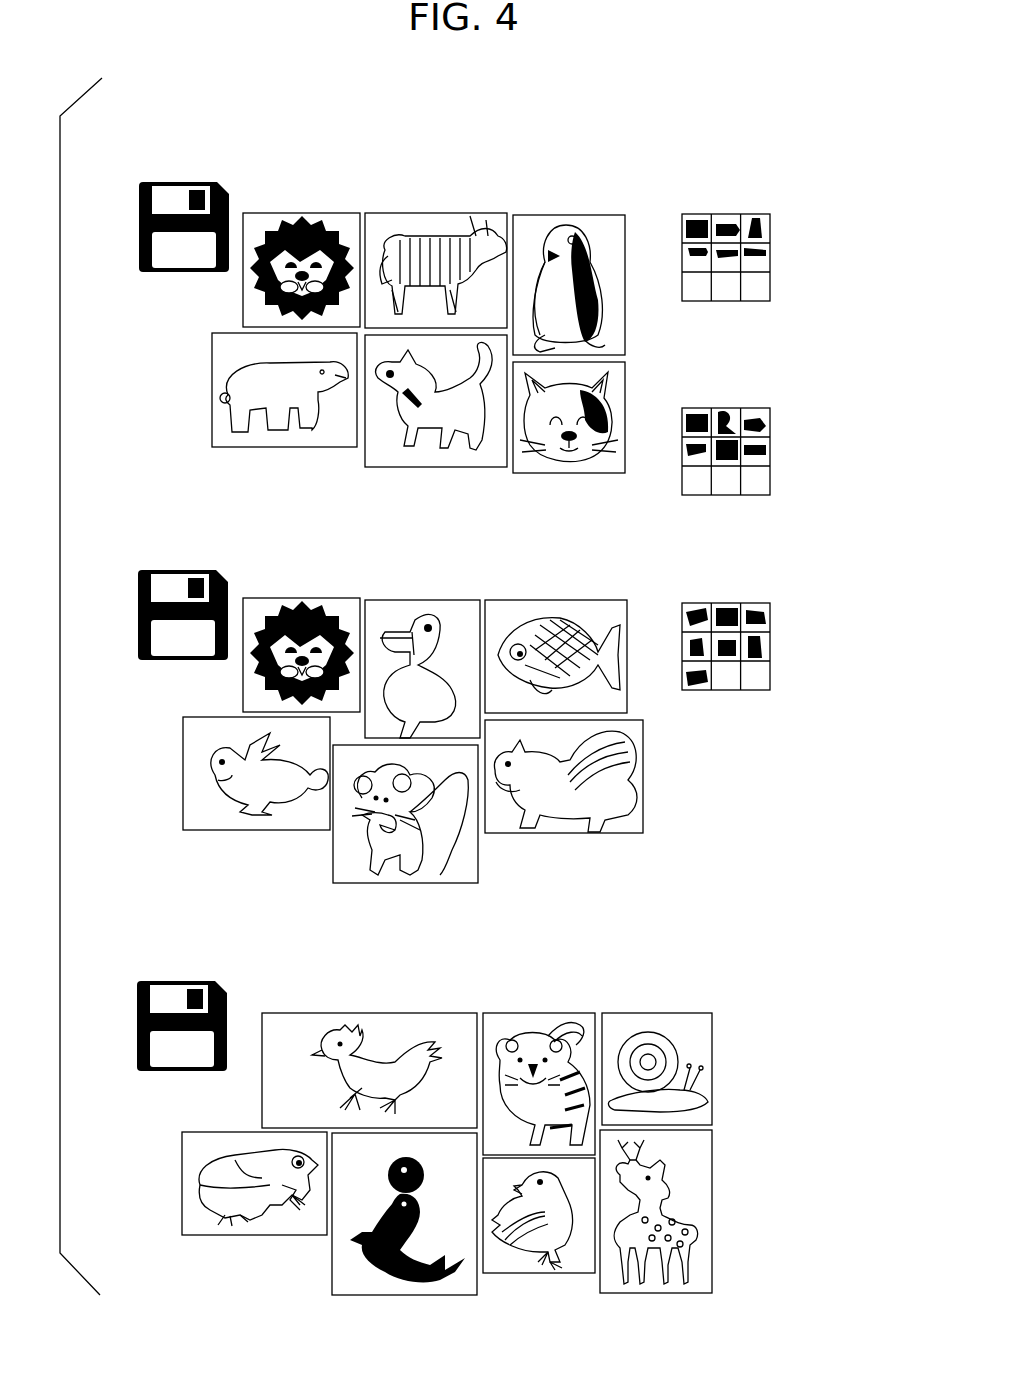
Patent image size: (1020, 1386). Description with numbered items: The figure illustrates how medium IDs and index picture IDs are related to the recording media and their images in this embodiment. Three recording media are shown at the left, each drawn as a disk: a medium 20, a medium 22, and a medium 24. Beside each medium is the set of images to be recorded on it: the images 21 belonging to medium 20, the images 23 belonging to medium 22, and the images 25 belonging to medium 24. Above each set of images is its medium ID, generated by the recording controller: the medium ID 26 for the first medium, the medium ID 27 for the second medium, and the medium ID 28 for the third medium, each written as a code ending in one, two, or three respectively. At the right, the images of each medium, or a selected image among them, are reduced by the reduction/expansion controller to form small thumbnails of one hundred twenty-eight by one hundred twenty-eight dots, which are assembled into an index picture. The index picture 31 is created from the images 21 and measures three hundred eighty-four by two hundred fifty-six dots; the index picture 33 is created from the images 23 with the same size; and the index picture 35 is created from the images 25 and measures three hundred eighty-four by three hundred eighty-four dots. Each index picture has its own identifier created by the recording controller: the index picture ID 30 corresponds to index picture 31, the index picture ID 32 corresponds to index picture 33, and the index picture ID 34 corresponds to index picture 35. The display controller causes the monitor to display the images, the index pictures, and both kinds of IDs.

The medium 20 is at (185, 182).
The images 21 is at (250, 317).
The medium 22 is at (185, 570).
The images 23 is at (250, 704).
The medium 24 is at (184, 981).
The images 25 is at (487, 1084).
The medium ID 26 is at (303, 188).
The medium ID 27 is at (303, 575).
The medium ID 28 is at (315, 986).
The index picture ID 30 is at (700, 163).
The index picture 31 is at (770, 253).
The index picture ID 32 is at (700, 358).
The index picture 33 is at (770, 455).
The index picture ID 34 is at (700, 553).
The index picture 35 is at (770, 650).